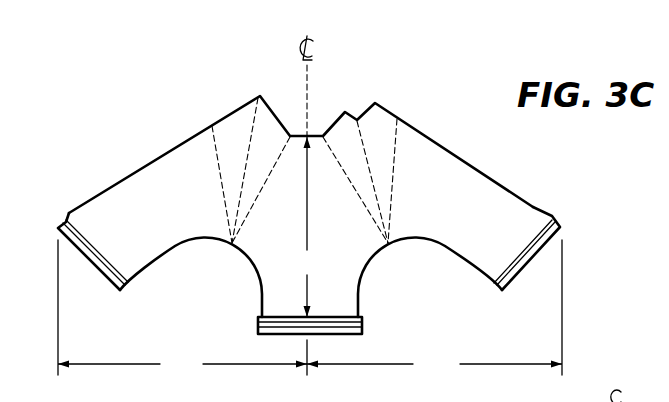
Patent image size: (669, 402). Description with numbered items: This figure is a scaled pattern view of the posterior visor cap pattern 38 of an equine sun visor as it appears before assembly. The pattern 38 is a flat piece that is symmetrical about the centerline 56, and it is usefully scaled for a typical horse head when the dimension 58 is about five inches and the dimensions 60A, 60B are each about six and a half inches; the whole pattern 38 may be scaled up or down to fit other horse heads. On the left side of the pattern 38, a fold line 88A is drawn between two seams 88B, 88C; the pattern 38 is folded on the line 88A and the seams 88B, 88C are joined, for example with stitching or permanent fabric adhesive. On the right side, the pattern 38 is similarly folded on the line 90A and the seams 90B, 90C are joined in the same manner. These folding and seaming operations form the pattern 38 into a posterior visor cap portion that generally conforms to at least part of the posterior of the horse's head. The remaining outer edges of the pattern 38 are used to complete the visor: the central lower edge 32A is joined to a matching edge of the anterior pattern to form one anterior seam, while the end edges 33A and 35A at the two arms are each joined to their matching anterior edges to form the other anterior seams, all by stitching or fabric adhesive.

The posterior visor cap pattern 38 is at (420, 98).
The edge 32A is at (350, 340).
The edge 33A is at (96, 266).
The edge 35A is at (522, 268).
The centerline 56 is at (307, 80).
The dimension 58 is at (306, 227).
The dimension 60A is at (182, 308).
The dimension 60B is at (434, 307).
The line 88A is at (249, 143).
The seam 88B is at (280, 163).
The seam 88C is at (218, 163).
The line 90A is at (368, 162).
The seam 90B is at (395, 182).
The seam 90C is at (340, 163).